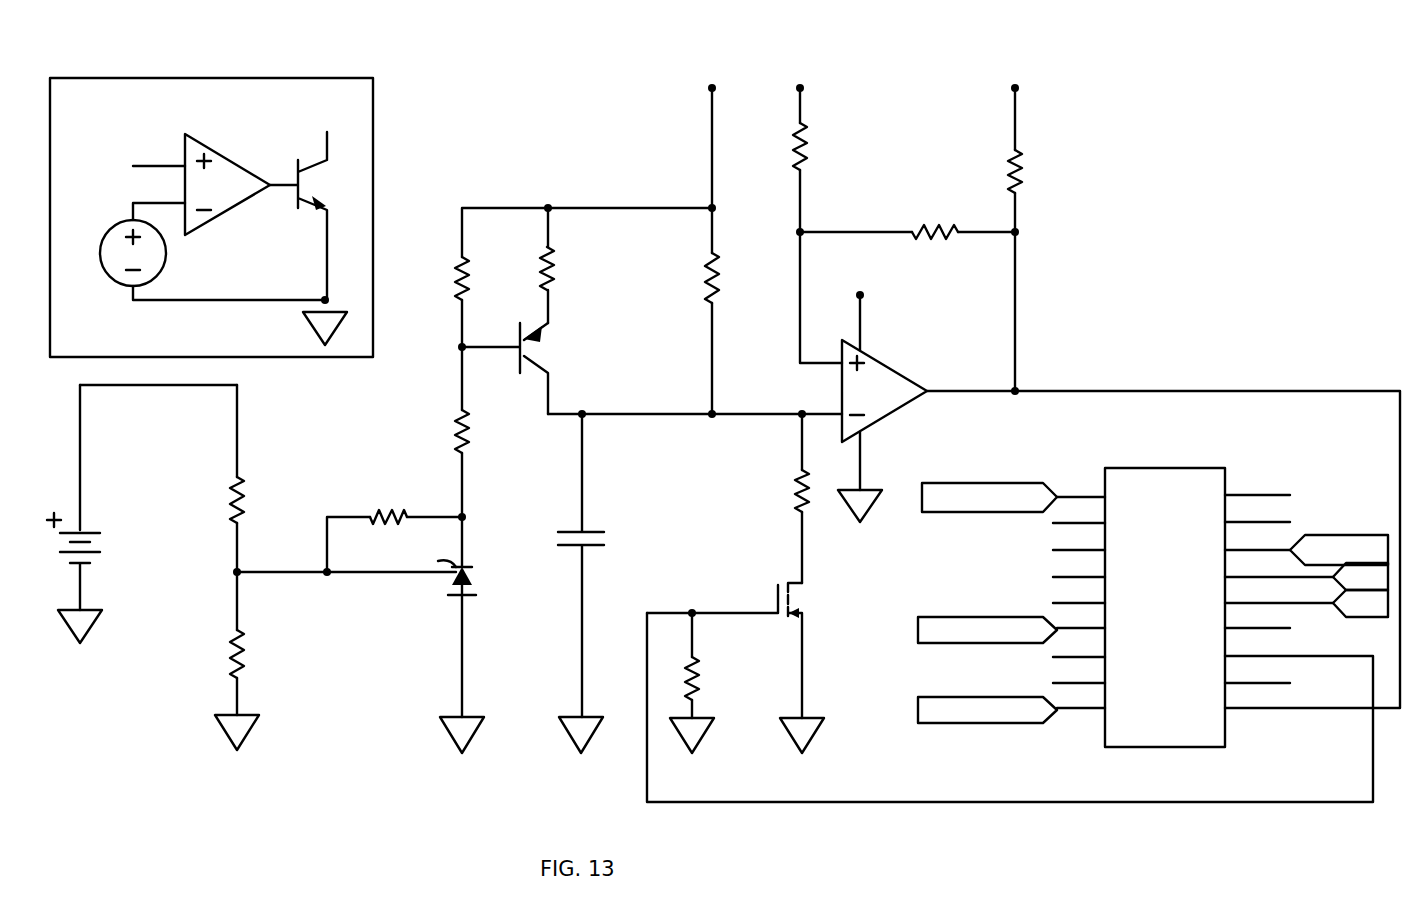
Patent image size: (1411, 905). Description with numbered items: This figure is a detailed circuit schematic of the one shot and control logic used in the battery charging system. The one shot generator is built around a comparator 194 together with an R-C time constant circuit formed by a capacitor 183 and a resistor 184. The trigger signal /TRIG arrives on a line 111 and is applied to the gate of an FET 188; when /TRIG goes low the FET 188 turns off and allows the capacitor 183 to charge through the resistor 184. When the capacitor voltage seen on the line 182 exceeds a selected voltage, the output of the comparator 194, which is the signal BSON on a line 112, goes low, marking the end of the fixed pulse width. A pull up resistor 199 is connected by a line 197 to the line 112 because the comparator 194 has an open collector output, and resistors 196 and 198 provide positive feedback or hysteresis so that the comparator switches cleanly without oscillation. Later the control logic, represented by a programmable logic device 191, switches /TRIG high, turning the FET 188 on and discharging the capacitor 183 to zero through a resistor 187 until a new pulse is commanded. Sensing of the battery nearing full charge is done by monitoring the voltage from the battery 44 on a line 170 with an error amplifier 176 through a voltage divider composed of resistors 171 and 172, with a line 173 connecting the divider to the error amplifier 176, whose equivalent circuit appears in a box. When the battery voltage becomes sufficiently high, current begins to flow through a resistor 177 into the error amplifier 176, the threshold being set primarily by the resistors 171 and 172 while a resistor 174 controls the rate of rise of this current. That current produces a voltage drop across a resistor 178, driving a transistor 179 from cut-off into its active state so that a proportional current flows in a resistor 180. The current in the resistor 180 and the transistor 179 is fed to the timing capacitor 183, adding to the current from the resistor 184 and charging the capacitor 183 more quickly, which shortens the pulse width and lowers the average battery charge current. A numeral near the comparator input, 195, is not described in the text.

The battery 44 is at (82, 528).
The line 170 is at (197, 387).
The resistor 171 is at (230, 497).
The resistor 172 is at (228, 650).
The line 173 is at (340, 576).
The resistor 174 is at (372, 513).
The error amplifier 176 is at (375, 137).
The resistor 177 is at (455, 413).
The resistor 178 is at (458, 262).
The transistor 179 is at (540, 338).
The resistor 180 is at (540, 262).
The line 182 is at (563, 412).
The capacitor 183 is at (575, 530).
The resistor 184 is at (705, 278).
The resistor 187 is at (790, 485).
The FET 188 is at (800, 612).
The programmable logic device 191 is at (1187, 467).
The comparator 194 is at (882, 425).
The comparator reference node 195 is at (797, 262).
The resistor 196 is at (795, 140).
The line 197 is at (1020, 302).
The resistor 198 is at (925, 224).
The pull up resistor 199 is at (1022, 177).
The line 111 is at (646, 731).
The line 112 is at (1187, 390).